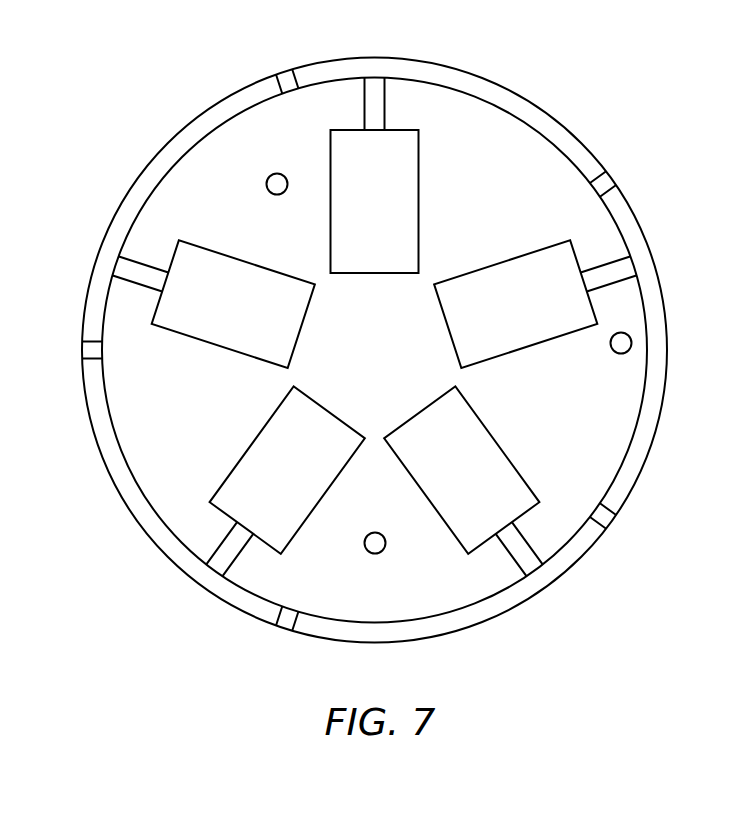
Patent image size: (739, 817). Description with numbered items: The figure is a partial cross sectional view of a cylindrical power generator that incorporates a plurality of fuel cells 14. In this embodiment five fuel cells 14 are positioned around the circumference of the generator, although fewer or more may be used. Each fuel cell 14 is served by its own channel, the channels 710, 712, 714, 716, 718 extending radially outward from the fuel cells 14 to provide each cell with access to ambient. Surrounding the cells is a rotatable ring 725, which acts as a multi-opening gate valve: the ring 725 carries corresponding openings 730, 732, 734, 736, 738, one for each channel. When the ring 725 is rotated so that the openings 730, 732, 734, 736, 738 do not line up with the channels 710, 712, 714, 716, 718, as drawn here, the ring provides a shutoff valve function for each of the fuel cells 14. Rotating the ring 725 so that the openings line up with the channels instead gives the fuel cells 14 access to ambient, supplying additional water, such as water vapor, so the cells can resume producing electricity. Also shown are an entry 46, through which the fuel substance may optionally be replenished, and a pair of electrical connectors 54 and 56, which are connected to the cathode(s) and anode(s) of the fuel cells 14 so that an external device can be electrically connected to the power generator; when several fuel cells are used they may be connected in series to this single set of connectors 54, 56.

The fuel cell 14 is at (502, 262).
The entry 46 is at (613, 352).
The electrical connector 54 is at (268, 176).
The electrical connector 56 is at (383, 551).
The channel 710 is at (385, 100).
The channel 712 is at (605, 258).
The channel 714 is at (510, 558).
The channel 716 is at (220, 543).
The channel 718 is at (143, 263).
The rotatable ring 725 is at (510, 108).
The opening 730 is at (290, 76).
The opening 732 is at (597, 172).
The opening 734 is at (600, 518).
The opening 736 is at (273, 618).
The opening 738 is at (92, 347).